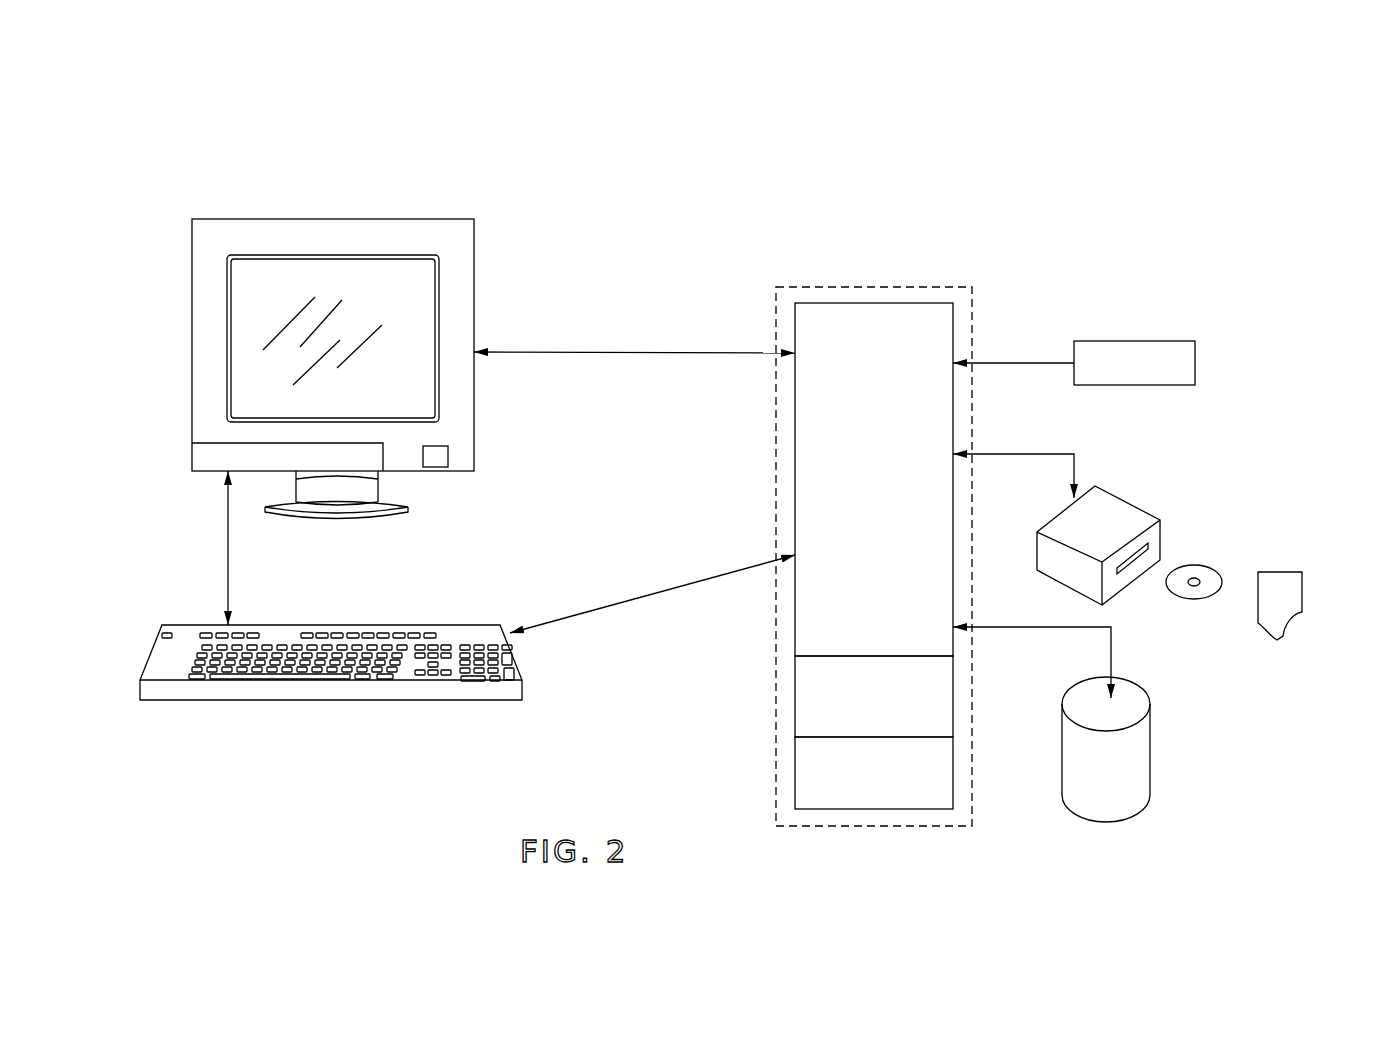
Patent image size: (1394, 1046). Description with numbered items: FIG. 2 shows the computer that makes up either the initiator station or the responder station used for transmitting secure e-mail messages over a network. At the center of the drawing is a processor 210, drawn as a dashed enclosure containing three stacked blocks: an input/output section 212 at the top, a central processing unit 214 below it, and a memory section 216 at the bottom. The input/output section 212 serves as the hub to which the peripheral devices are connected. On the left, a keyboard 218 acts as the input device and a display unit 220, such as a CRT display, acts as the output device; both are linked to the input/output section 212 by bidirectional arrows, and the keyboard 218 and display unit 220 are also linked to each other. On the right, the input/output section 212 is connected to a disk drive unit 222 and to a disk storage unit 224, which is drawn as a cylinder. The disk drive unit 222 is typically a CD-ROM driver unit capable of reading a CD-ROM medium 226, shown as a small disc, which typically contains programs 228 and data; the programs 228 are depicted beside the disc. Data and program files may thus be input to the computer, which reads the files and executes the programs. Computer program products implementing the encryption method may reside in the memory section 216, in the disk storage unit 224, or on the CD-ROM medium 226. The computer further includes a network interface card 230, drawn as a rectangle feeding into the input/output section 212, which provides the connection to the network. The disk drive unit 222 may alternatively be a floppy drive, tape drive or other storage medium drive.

The processor 210 is at (776, 292).
The input/output section 212 is at (795, 425).
The central processing unit 214 is at (795, 692).
The memory section 216 is at (795, 770).
The keyboard 218 is at (147, 657).
The display unit 220 is at (192, 370).
The disk drive unit 222 is at (1152, 513).
The disk storage unit 224 is at (1152, 770).
The CD-ROM medium 226 is at (1212, 567).
The programs 228 is at (1302, 595).
The network interface card 230 is at (1195, 352).